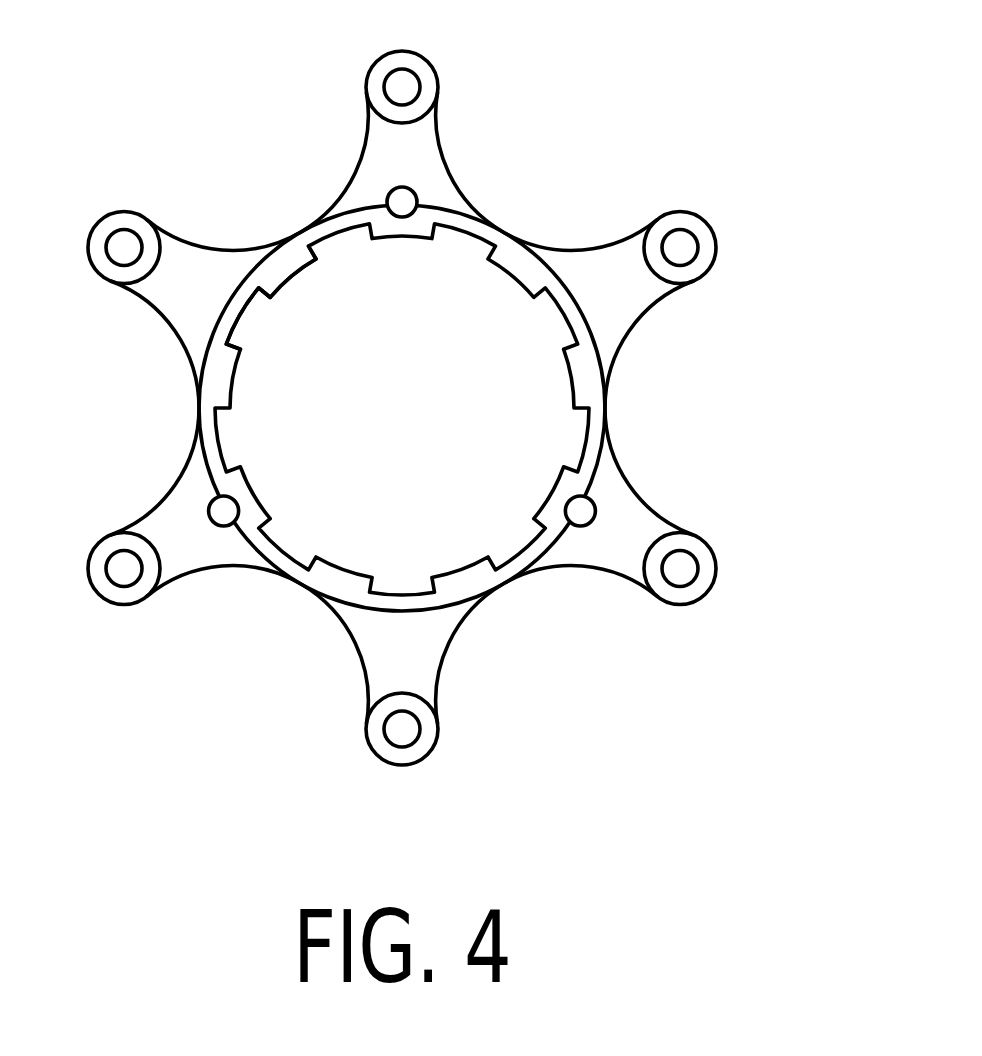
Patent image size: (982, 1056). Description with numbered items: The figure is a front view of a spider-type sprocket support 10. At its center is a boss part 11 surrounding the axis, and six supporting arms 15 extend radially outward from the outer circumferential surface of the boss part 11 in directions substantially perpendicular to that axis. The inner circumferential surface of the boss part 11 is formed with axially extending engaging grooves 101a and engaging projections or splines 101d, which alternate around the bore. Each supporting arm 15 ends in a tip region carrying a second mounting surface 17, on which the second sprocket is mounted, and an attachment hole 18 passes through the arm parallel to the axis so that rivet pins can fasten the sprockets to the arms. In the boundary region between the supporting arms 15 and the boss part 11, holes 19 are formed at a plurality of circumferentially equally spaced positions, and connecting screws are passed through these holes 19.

The sprocket support 10 is at (468, 401).
The boss part 11 is at (527, 267).
The supporting arms 15 is at (628, 309).
The second mounting surfaces 17 is at (706, 246).
The attachment holes 18 is at (682, 246).
The holes 19 is at (396, 204).
The engaging grooves 101a is at (248, 313).
The engaging projections 101d is at (299, 274).